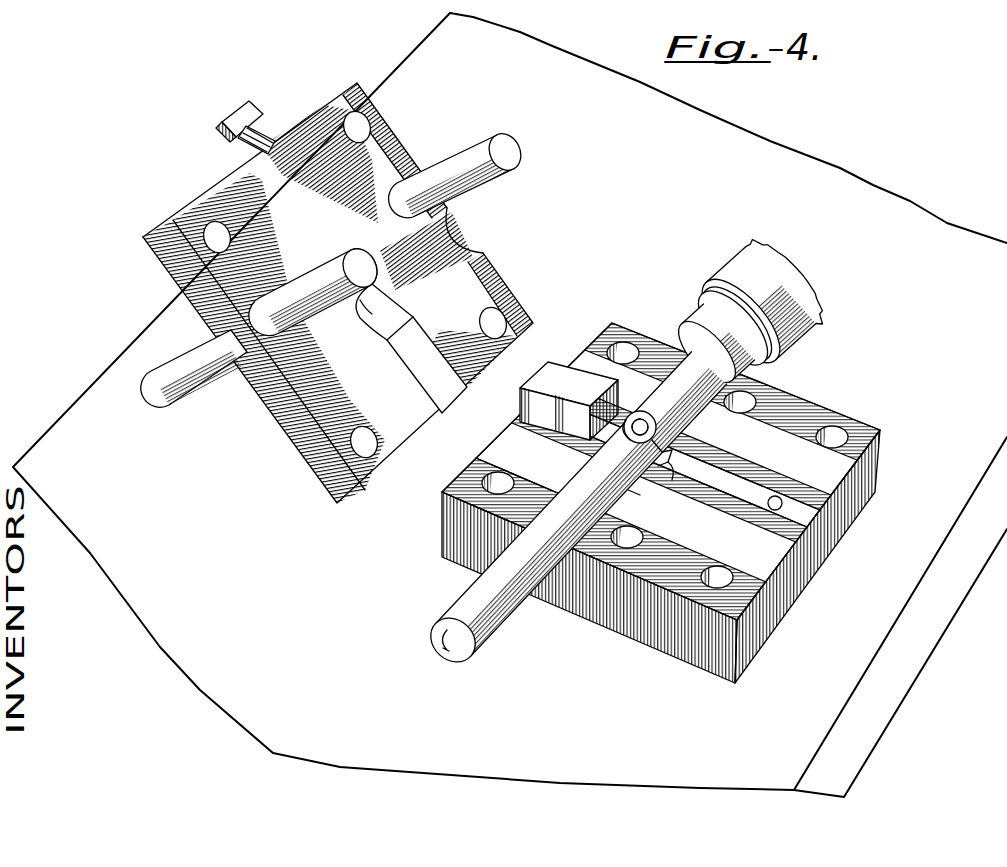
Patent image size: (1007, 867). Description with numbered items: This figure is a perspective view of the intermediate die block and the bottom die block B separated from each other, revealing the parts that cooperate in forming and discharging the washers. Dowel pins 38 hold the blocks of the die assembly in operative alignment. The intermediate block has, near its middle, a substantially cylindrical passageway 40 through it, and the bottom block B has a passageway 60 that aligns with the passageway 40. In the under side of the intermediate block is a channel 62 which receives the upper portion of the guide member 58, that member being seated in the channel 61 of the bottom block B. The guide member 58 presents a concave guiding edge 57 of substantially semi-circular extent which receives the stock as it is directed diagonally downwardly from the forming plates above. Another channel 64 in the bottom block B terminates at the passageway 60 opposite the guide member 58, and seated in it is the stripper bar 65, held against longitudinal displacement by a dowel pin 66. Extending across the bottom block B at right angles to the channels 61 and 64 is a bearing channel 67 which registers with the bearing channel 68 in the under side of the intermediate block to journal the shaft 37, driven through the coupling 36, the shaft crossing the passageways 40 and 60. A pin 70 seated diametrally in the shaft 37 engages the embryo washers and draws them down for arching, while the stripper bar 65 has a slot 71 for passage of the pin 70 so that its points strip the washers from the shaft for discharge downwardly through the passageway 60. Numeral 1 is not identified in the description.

The holder plate 1 is at (493, 281).
The coupling 36 is at (803, 270).
The shaft 37 is at (510, 587).
The dowel pins 38 is at (470, 158).
The cylindrical passageway 40 is at (377, 297).
The concave guiding edge 57 is at (633, 410).
The guide member 58 is at (542, 380).
The passageway 60 is at (673, 447).
The channel 61 is at (560, 435).
The channel 62 is at (432, 363).
The channel 64 is at (757, 480).
The stripper bar 65 is at (707, 477).
The dowel pin 66 is at (775, 503).
The bearing channel 67 is at (623, 497).
The bearing channel 68 is at (458, 250).
The pin 70 is at (647, 417).
The slot 71 is at (672, 465).
The bottom die block B is at (847, 467).